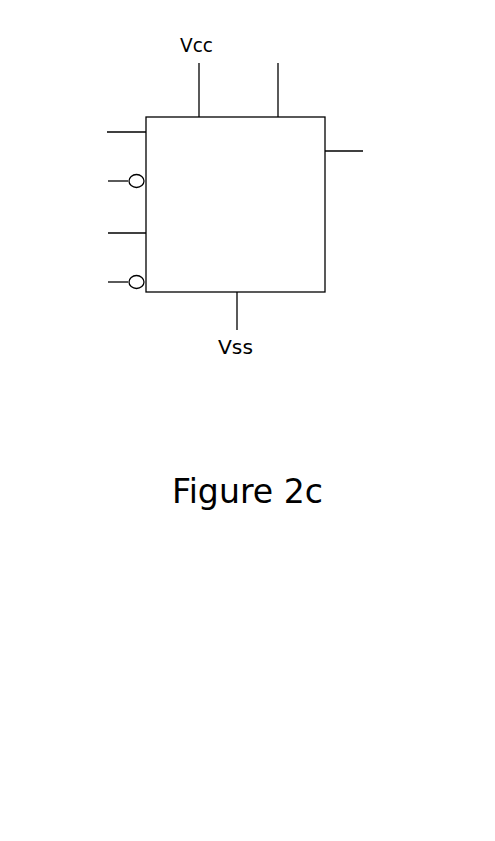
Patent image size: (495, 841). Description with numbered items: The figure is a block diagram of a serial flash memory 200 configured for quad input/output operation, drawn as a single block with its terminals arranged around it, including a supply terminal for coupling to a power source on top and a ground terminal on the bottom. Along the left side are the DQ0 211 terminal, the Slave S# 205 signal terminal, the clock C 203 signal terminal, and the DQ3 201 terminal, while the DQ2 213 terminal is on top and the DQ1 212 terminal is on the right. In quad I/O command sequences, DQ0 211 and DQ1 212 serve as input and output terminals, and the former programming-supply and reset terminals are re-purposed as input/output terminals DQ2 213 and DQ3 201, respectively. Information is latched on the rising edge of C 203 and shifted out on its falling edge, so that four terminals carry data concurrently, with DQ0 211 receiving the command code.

The serial flash memory 200 is at (235, 204).
The DQ3 terminal 201 is at (77, 283).
The clock C signal terminal 203 is at (93, 233).
The Slave (S#) signal 205 is at (90, 183).
The DQ0 terminal 211 is at (82, 131).
The DQ1 terminal 212 is at (392, 151).
The DQ2 terminal 213 is at (281, 75).